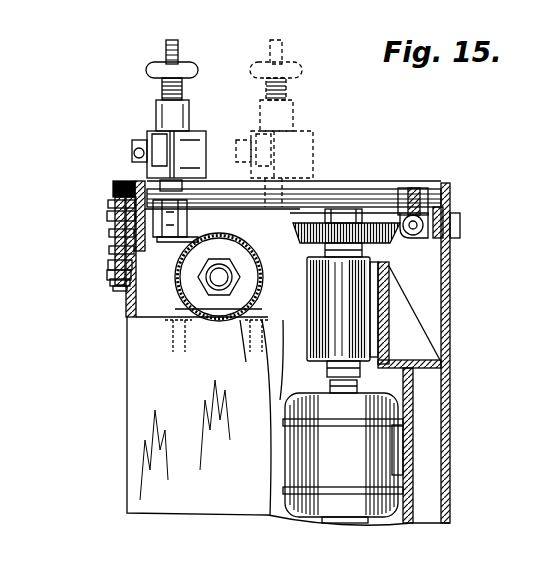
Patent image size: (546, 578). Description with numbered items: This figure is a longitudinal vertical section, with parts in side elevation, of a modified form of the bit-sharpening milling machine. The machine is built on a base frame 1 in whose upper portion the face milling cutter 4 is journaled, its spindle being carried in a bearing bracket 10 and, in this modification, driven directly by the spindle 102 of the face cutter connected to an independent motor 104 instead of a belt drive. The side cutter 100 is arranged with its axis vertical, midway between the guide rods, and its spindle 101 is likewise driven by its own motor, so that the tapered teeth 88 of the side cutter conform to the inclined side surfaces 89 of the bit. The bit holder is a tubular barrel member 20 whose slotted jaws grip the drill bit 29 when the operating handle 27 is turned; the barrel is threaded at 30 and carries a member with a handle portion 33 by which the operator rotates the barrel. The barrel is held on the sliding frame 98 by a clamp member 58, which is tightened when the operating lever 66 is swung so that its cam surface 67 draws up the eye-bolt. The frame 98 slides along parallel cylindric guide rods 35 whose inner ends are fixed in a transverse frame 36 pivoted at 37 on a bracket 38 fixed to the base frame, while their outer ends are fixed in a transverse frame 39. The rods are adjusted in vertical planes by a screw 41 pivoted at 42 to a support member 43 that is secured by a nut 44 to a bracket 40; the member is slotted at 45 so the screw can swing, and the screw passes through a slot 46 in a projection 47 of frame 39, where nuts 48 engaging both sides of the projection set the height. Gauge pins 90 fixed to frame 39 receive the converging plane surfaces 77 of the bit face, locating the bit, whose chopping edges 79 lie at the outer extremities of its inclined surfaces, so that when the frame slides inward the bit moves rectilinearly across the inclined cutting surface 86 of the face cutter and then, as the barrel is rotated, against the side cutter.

The base frame 1 is at (126, 372).
The face milling cutter 4 is at (232, 304).
The bearing bracket 10 is at (310, 275).
The tubular barrel member 20 is at (184, 88).
The operating handle 27 is at (158, 62).
The drill bit 29 is at (187, 197).
The threaded portion of barrel member 30 is at (146, 71).
The handle portion 33 is at (178, 48).
The guide rods 35 is at (345, 196).
The transverse frame 36 is at (410, 188).
The pivot 37 is at (418, 226).
The bracket 38 is at (424, 232).
The transverse frame 39 is at (137, 183).
The bracket 40 is at (112, 288).
The screw 41 is at (112, 238).
The pivot 42 is at (112, 250).
The support member 43 is at (108, 275).
The nut 44 is at (110, 290).
The slot 45 is at (112, 263).
The slot 46 is at (107, 215).
The projection 47 is at (110, 203).
The nuts 48 is at (113, 186).
The clamp member 58 is at (158, 118).
The operating lever 66 is at (134, 153).
The cam surface 67 is at (138, 143).
The converging plane surfaces 77 is at (158, 330).
The chopping edges 79 is at (170, 316).
The inclined cutting surface 86 is at (273, 303).
The tapered teeth 88 is at (253, 352).
The inclined side surfaces 89 is at (197, 238).
The gauge pins 90 is at (168, 245).
The sliding frame 98 is at (190, 135).
The side cutter 100 is at (450, 194).
The spindle of side cutter 101 is at (413, 372).
The spindle of face cutter 102 is at (215, 300).
The motor 104 is at (365, 440).